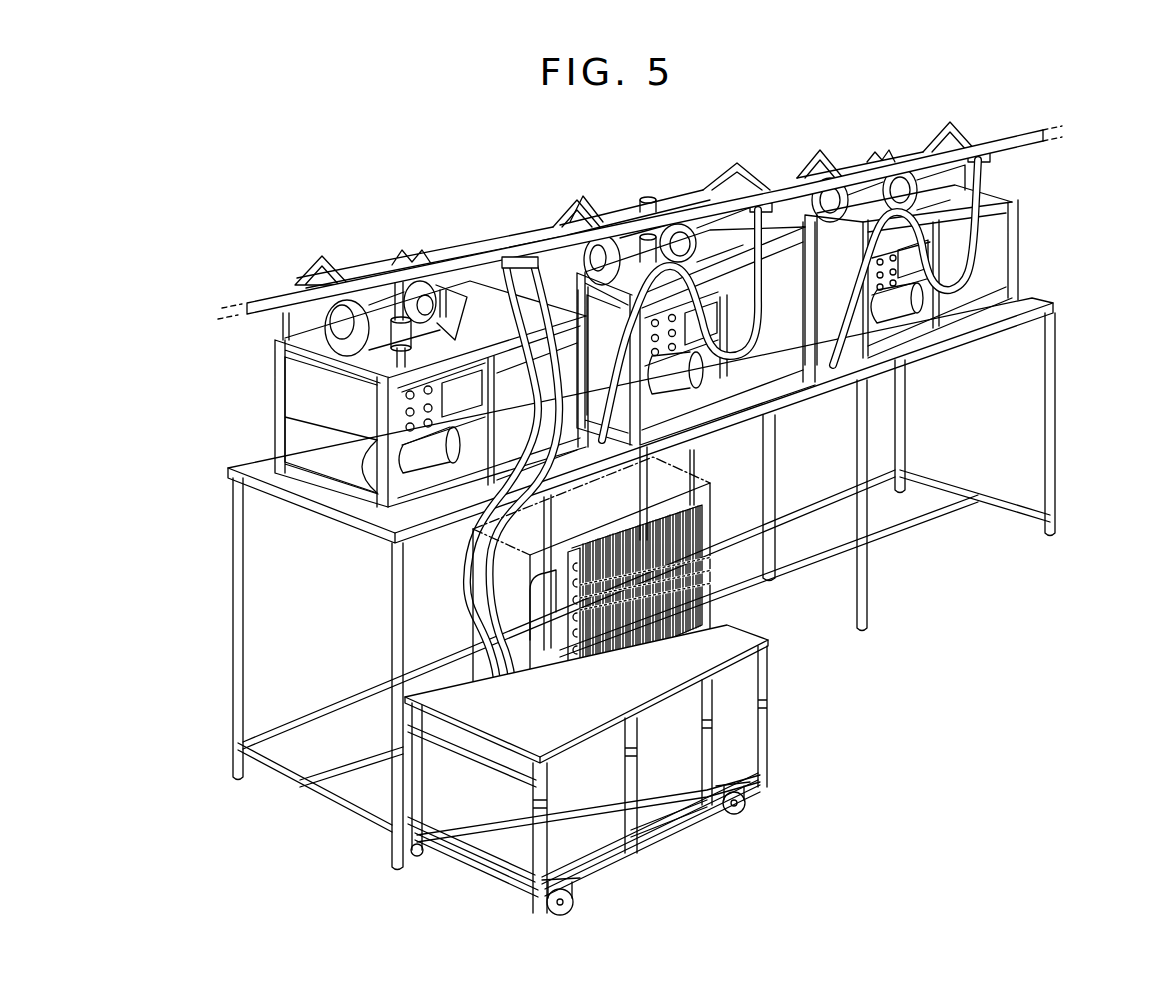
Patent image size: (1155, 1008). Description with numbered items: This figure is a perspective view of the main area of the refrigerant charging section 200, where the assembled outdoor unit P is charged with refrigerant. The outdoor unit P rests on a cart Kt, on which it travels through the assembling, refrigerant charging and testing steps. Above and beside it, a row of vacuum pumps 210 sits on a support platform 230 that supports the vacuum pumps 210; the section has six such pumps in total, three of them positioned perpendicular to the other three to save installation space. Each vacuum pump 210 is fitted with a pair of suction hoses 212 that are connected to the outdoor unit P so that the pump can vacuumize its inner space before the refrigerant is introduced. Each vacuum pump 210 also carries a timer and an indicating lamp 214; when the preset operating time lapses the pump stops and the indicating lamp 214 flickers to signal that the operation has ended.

The refrigerant charging section 200 is at (1015, 652).
The vacuum pump 210 is at (272, 371).
The suction hose 212 is at (507, 258).
The indicating lamp 214 is at (397, 300).
The support platform 230 is at (1058, 414).
The outdoor unit P is at (717, 598).
The cart Kt is at (768, 698).